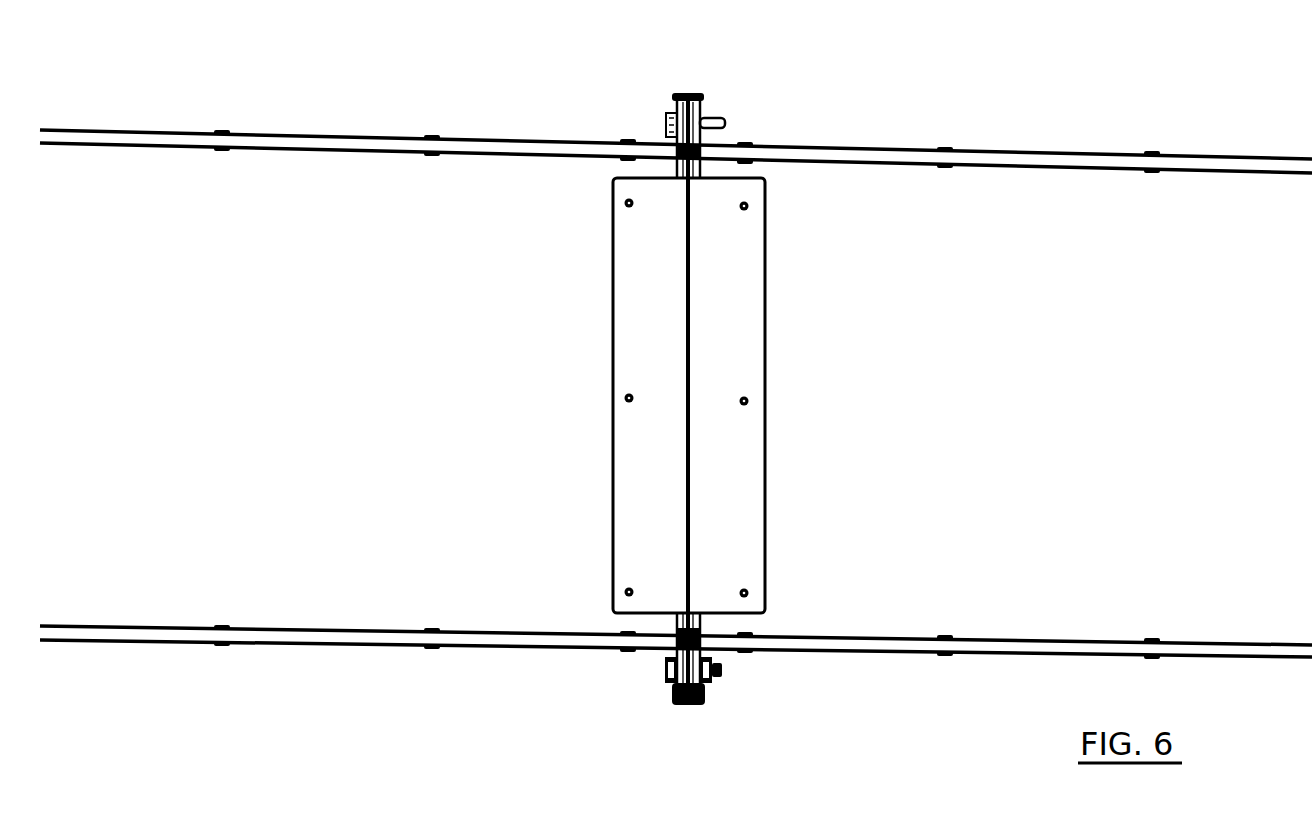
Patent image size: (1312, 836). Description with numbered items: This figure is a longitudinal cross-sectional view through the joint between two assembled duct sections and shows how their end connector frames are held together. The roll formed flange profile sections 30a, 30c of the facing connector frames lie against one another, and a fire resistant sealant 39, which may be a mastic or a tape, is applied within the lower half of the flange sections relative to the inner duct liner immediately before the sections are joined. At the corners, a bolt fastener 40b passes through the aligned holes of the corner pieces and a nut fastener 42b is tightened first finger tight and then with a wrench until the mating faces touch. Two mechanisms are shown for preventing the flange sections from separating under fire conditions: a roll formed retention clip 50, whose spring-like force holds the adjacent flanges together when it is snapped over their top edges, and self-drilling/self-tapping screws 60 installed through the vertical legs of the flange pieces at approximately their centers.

The flange profile section 30a is at (670, 136).
The flange profile section 30c is at (672, 690).
The fire resistant sealant 39 is at (690, 472).
The roll formed retention clip 50 is at (688, 94).
The self-drilling/self-tapping screw 60 is at (712, 124).
The bolt fastener 40b is at (665, 668).
The nut fastener 42b is at (722, 674).